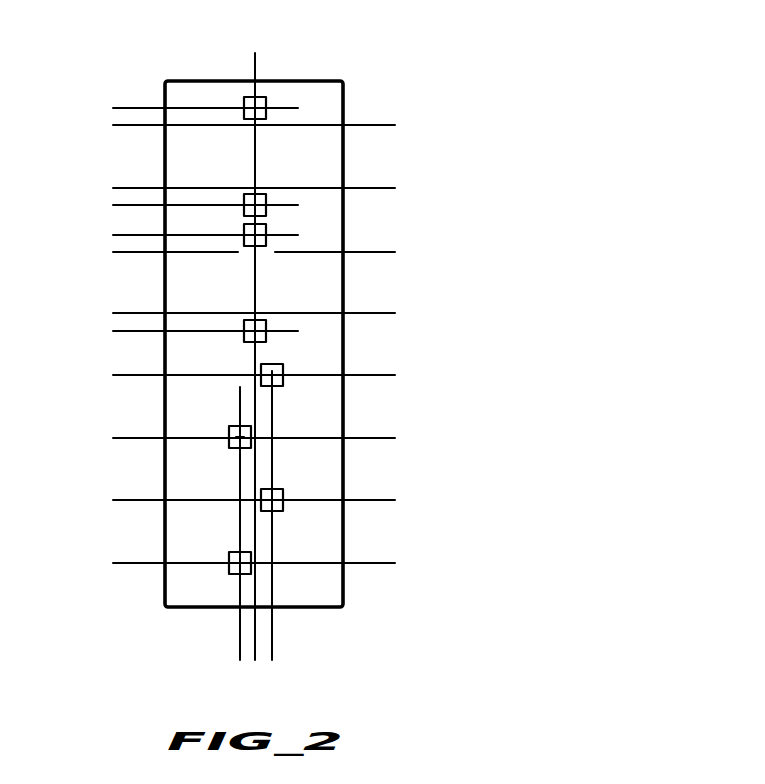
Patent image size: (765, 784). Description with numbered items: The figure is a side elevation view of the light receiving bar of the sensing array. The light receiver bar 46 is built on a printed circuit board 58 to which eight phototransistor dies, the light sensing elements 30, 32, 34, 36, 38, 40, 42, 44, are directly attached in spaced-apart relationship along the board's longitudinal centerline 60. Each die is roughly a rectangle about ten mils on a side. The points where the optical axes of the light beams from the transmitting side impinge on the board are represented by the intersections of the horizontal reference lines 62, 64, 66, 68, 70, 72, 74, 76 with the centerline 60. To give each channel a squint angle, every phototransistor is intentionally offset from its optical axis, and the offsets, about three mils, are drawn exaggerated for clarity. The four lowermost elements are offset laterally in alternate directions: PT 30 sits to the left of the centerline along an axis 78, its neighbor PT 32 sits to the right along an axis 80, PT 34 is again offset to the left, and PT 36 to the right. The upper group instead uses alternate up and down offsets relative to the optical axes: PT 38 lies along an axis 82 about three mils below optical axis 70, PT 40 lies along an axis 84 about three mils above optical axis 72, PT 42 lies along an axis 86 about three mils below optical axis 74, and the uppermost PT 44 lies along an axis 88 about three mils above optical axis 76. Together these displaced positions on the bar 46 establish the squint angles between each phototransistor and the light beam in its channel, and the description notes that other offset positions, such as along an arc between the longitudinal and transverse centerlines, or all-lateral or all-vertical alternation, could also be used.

The receiver bar 46 is at (289, 330).
The printed circuit board 58 is at (187, 93).
The longitudinal centerline 60 is at (280, 45).
The axis 78 is at (237, 635).
The axis 80 is at (274, 642).
The phototransistor 30 is at (234, 552).
The phototransistor 32 is at (278, 511).
The phototransistor 34 is at (236, 426).
The phototransistor 36 is at (279, 386).
The phototransistor 38 is at (251, 320).
The phototransistor 40 is at (262, 246).
The phototransistor 42 is at (252, 194).
The phototransistor 44 is at (262, 120).
The reference line 62 is at (133, 567).
The reference line 64 is at (128, 502).
The reference line 66 is at (380, 440).
The reference line 68 is at (380, 377).
The optical axis 70 is at (383, 313).
The optical axis 72 is at (382, 250).
The optical axis 74 is at (385, 186).
The optical axis 76 is at (363, 123).
The axis 82 is at (122, 332).
The axis 84 is at (122, 236).
The axis 86 is at (122, 205).
The axis 88 is at (128, 109).